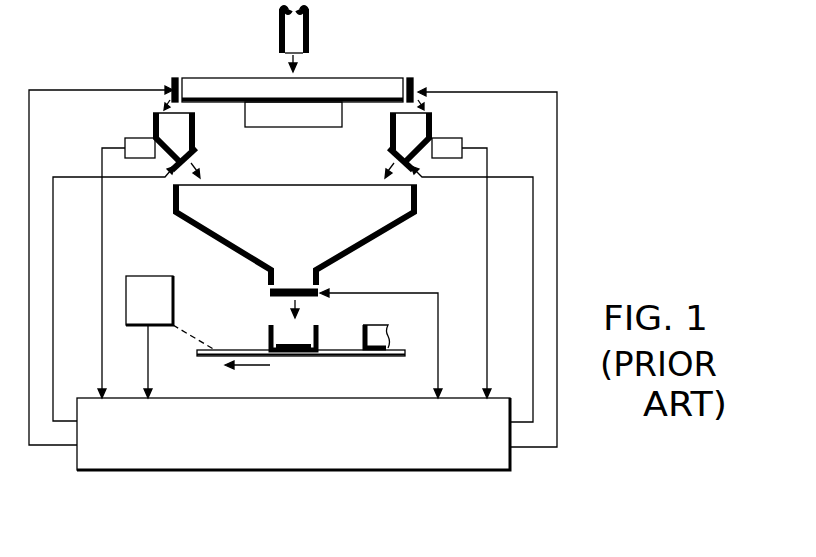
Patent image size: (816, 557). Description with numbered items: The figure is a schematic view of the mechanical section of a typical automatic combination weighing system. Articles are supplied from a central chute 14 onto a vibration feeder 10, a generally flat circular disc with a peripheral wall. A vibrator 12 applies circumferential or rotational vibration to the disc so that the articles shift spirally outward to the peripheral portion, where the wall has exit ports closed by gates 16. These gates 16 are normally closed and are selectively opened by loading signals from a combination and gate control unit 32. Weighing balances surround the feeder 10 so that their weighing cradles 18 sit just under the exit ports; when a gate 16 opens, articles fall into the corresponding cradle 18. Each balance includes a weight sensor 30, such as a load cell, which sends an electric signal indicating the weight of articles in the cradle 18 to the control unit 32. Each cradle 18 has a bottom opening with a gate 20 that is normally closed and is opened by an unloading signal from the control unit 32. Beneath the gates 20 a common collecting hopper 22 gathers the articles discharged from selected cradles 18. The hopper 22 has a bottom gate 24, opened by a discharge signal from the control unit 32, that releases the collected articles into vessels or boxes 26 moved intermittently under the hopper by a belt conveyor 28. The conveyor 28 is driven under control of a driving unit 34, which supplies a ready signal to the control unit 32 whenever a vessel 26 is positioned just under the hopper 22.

The vibration feeder 10 is at (345, 78).
The vibrator 12 is at (292, 128).
The central chute 14 is at (312, 30).
The gate 16 is at (172, 79).
The weighing cradle 18 is at (195, 121).
The gate 20 is at (197, 152).
The collecting hopper 22 is at (385, 228).
The gate 24 is at (268, 292).
The vessel 26 is at (268, 326).
The belt conveyor 28 is at (341, 357).
The weight sensor 30 is at (138, 138).
The combination and gate control unit 32 is at (415, 470).
The driving unit 34 is at (148, 276).